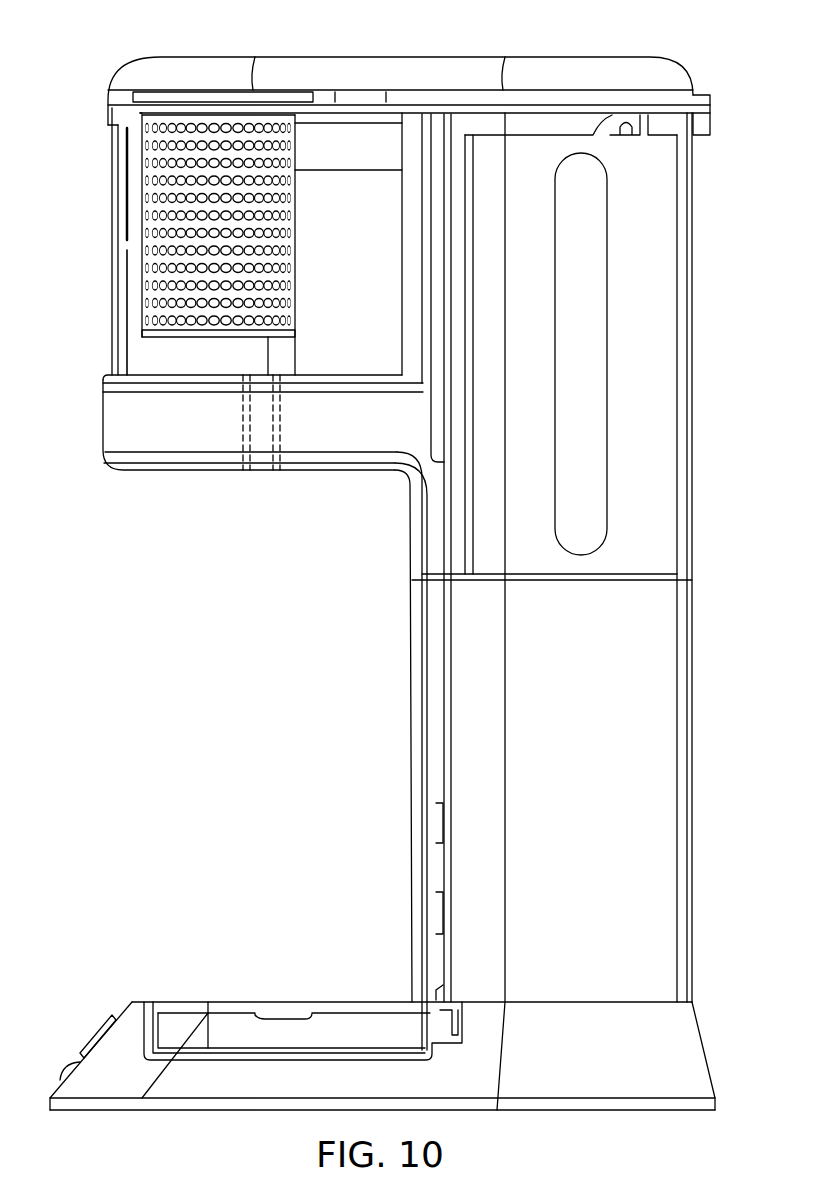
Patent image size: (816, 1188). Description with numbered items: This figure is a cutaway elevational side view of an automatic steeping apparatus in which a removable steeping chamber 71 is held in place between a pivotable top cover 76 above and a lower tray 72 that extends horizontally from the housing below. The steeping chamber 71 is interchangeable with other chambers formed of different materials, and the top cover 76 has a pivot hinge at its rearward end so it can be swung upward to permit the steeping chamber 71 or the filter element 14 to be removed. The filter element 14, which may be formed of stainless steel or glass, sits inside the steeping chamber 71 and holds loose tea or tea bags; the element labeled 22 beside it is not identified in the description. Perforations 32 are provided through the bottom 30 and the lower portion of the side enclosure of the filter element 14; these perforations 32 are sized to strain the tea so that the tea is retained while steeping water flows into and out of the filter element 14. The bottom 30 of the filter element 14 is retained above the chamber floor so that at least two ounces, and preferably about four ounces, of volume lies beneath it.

The pivotable top cover 76 is at (373, 70).
The removable steeping chamber 71 is at (125, 160).
The filter element 14 is at (135, 242).
The perforations 32 is at (278, 232).
The filter housing 22 is at (297, 297).
The bottom of the filter element 30 is at (205, 340).
The lower tray 72 is at (180, 475).